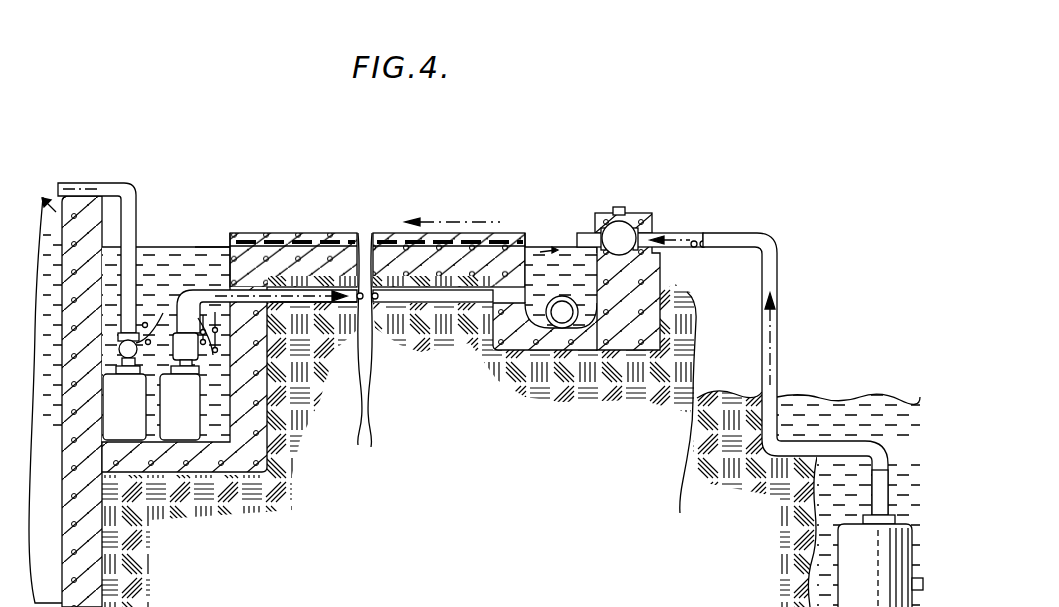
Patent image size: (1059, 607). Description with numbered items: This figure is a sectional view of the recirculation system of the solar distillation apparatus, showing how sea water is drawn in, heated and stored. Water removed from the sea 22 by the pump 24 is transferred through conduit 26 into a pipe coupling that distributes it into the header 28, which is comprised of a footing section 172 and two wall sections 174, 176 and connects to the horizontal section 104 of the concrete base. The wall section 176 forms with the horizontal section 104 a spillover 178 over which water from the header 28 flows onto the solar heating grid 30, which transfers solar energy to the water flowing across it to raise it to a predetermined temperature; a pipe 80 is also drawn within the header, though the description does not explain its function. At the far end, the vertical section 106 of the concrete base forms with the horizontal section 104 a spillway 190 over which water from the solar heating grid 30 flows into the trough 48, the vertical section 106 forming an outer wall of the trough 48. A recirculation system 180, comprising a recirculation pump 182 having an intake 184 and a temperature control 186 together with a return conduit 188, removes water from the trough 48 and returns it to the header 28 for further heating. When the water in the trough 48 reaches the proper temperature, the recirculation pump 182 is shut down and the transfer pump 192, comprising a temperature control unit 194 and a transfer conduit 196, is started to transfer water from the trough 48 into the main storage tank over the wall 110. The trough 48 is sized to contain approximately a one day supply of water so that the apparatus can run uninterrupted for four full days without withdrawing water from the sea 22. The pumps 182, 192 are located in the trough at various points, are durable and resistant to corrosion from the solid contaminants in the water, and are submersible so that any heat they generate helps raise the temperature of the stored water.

The transfer conduit 196 is at (138, 162).
The temperature control unit 194 is at (166, 238).
The temperature control 186 is at (187, 258).
The trough 48 is at (200, 232).
The spillway 190 is at (240, 232).
The return conduit 188 is at (288, 294).
The horizontal section 104 is at (453, 262).
The solar heating grid 30 is at (503, 226).
The spillover 178 is at (533, 222).
The header 28 is at (578, 230).
The wall section 174 is at (660, 273).
The footing section 172 is at (673, 324).
The conduit 26 is at (780, 352).
The sea 22 is at (892, 482).
The pump 24 is at (840, 588).
The pipe 80 is at (548, 334).
The wall section 176 is at (477, 342).
The recirculation system 180 is at (314, 306).
The vertical section 106 is at (213, 355).
The intake 184 is at (270, 420).
The transfer pump 192 is at (144, 417).
The recirculation pump 182 is at (199, 417).
The wall 110 is at (94, 528).